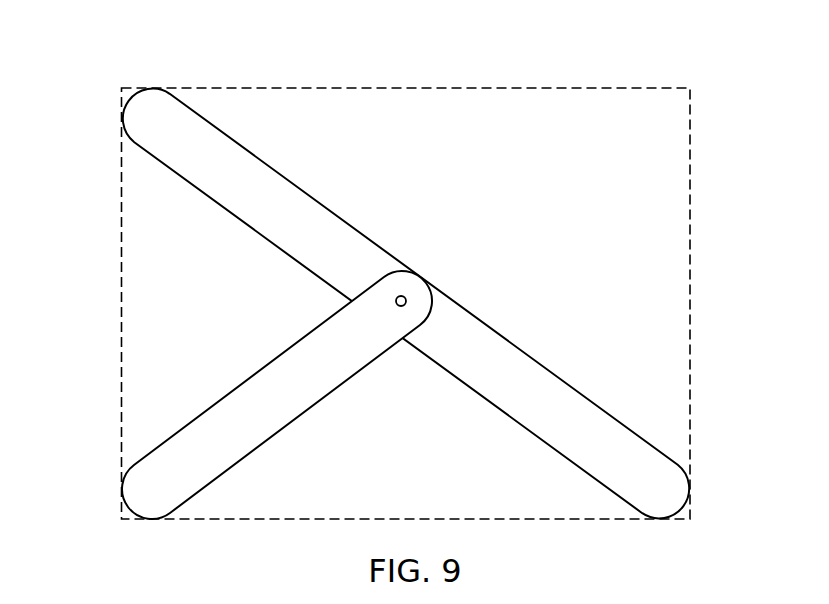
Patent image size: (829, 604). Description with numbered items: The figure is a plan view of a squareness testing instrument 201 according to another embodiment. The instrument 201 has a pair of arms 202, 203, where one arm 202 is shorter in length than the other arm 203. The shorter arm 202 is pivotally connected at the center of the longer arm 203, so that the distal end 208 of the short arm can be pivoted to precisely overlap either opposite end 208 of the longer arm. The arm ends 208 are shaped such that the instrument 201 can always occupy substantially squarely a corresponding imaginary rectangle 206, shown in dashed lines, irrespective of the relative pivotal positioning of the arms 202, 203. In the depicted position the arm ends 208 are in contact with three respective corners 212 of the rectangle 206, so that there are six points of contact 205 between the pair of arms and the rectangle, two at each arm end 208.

The instrument 201 is at (459, 242).
The shorter arm 202 is at (308, 410).
The longer arm 203 is at (568, 383).
The points of contact 205 is at (152, 88).
The imaginary rectangle 206 is at (407, 87).
The arm ends 208 is at (178, 130).
The corners 212 is at (121, 87).